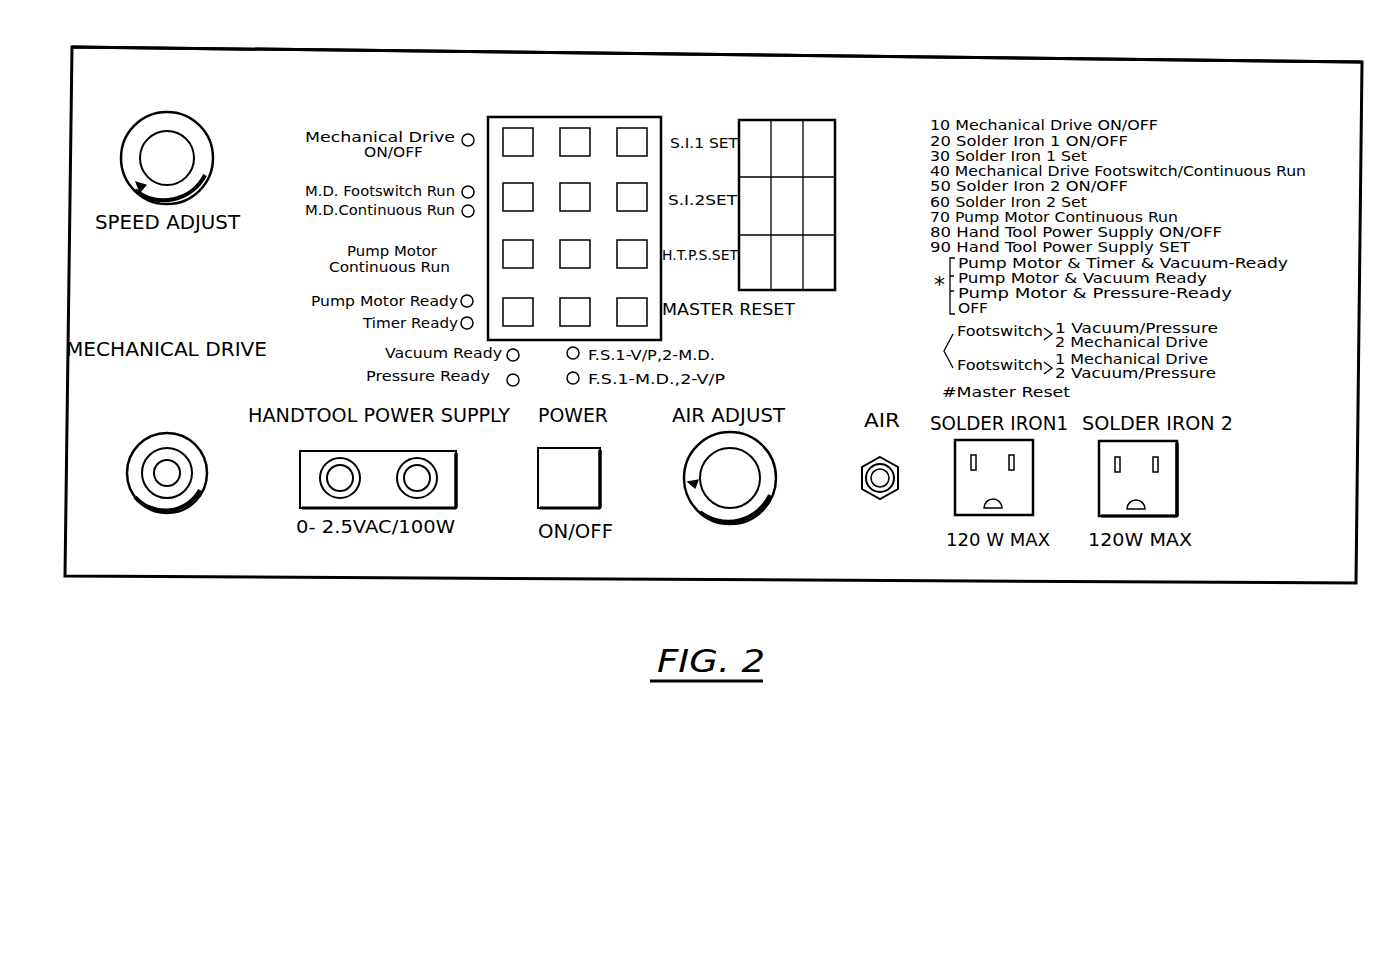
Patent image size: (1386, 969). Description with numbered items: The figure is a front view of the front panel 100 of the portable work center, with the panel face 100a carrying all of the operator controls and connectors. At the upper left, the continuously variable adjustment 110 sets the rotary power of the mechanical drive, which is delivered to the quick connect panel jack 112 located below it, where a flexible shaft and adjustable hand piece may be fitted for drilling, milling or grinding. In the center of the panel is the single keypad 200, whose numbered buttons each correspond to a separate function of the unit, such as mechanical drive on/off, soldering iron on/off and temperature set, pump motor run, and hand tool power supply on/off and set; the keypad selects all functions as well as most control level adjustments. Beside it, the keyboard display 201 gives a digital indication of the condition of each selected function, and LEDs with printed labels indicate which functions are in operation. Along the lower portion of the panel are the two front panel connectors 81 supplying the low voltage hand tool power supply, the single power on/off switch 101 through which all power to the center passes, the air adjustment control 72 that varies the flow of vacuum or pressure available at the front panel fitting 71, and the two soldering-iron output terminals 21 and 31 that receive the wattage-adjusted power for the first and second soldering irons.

The front panel 100 is at (856, 46).
The front panel 100a is at (1028, 76).
The adjustment 110 is at (186, 114).
The quick connect panel jack 112 is at (172, 436).
The keypad 200 is at (582, 117).
The keyboard display 201 is at (800, 102).
The front panel connectors 81 is at (300, 480).
The power on/off switch 101 is at (601, 478).
The air adjustment control 72 is at (762, 515).
The front panel fitting 71 is at (866, 466).
The soldering-iron output terminal 21 is at (955, 490).
The soldering-iron output terminal 31 is at (1177, 488).